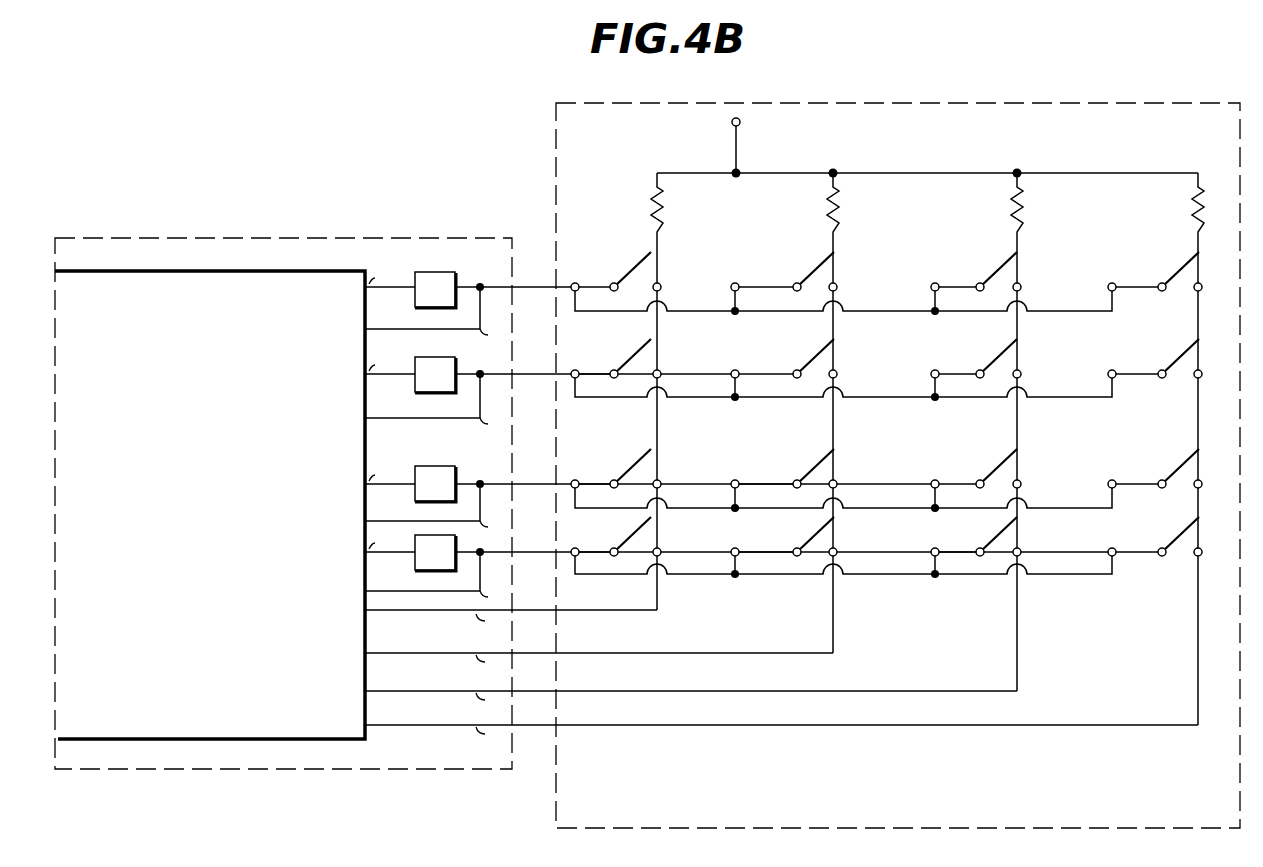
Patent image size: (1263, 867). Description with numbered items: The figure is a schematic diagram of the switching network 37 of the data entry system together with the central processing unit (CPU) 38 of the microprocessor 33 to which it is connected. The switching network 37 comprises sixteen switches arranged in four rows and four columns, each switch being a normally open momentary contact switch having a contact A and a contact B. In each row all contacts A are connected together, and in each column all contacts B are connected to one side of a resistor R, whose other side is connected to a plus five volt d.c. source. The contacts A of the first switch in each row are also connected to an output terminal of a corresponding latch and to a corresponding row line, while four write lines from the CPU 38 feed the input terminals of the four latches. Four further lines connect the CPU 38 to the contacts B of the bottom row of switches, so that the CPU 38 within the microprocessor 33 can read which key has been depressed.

The microprocessor 33 is at (437, 770).
The switching network 37 is at (556, 159).
The central processing unit (CPU) 38 is at (282, 268).